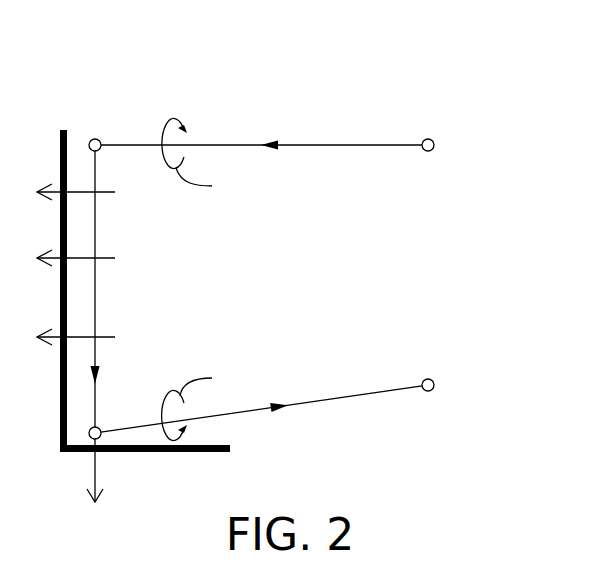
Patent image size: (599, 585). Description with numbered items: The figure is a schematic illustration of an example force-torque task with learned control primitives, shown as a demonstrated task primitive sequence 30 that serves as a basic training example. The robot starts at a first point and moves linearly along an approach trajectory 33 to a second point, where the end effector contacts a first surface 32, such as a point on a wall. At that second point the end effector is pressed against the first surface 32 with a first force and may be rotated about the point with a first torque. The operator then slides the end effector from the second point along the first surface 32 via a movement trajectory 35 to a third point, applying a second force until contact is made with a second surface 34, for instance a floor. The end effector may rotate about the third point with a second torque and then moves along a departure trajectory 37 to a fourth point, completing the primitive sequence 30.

The primitive sequence 30 is at (436, 54).
The first surface 32 is at (74, 139).
The approach trajectory 33 is at (338, 145).
The second surface 34 is at (211, 438).
The movement trajectory 35 is at (97, 305).
The departure trajectory 37 is at (339, 396).